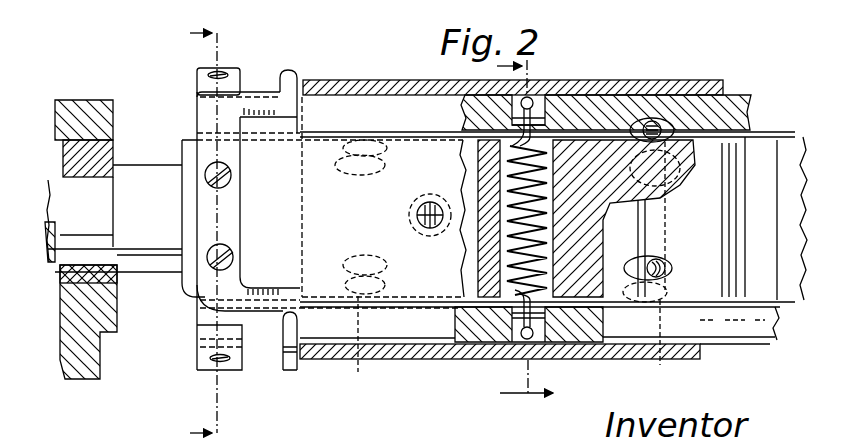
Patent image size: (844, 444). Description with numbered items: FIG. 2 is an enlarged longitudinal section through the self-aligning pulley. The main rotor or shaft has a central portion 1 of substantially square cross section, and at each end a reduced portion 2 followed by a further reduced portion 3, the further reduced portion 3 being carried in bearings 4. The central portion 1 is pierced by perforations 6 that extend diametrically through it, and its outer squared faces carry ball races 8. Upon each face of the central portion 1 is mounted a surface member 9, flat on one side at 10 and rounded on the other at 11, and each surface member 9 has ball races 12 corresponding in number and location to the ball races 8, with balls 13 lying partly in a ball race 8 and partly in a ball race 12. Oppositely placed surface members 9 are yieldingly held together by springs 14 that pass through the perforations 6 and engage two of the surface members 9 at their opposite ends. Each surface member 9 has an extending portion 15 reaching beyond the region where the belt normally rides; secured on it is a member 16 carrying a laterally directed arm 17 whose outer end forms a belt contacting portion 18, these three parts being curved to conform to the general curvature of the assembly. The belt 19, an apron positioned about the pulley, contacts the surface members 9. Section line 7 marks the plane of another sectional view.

The central portion 1 is at (707, 286).
The reduced portion 2 is at (124, 182).
The further reduced portion 3 is at (57, 190).
The bearings 4 is at (68, 108).
The perforations 6 is at (437, 196).
The section line 7- 7 is at (184, 234).
The ball races 8 is at (341, 288).
The surface member 9 is at (437, 294).
The flat side 10 is at (731, 137).
The rounded side 11 is at (738, 92).
The ball races 12 is at (355, 142).
The balls 13 is at (346, 163).
The springs 14 is at (416, 224).
The extending portion 15 is at (200, 110).
The member 16 is at (198, 72).
The laterally directed arm 17 is at (258, 92).
The belt contacting portion 18 is at (290, 70).
The belt 19 is at (366, 80).